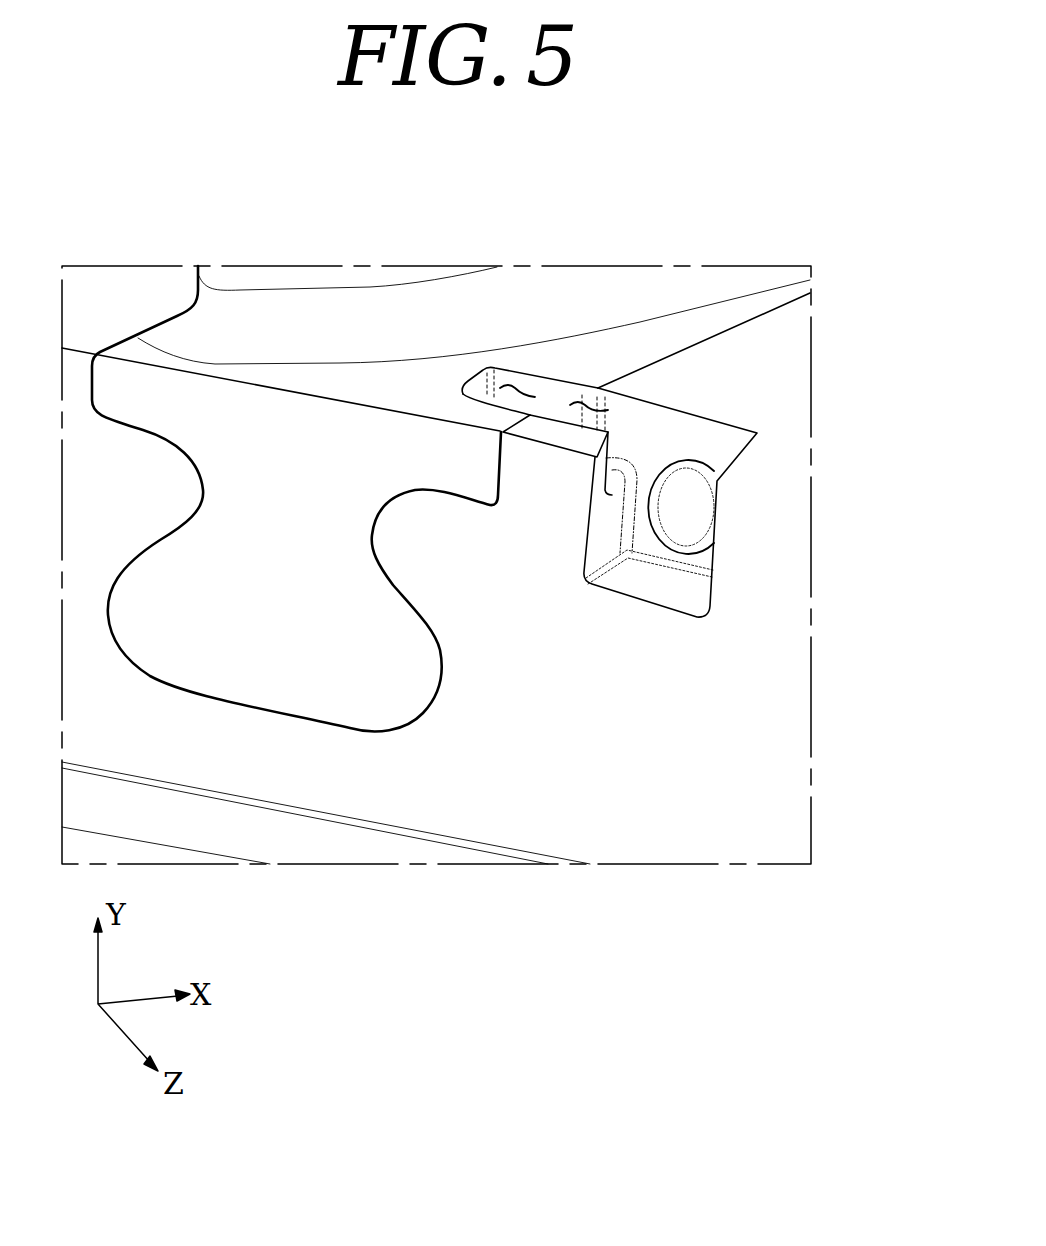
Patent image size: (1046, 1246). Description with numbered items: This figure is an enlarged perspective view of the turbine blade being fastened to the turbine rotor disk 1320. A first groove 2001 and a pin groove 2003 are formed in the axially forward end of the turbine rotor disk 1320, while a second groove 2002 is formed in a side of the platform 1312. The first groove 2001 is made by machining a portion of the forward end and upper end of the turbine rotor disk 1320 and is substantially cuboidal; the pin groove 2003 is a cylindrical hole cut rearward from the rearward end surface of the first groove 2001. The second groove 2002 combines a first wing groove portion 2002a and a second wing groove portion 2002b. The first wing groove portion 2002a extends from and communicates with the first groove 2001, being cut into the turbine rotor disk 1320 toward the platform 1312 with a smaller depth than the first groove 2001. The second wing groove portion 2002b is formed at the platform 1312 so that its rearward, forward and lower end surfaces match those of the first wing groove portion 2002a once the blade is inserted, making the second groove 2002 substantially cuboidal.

The platform 1312 is at (670, 337).
The turbine rotor disk 1320 is at (788, 328).
The first groove 2001 is at (648, 435).
The second groove 2002 is at (549, 302).
The first wing groove portion 2002a is at (596, 430).
The second wing groove portion 2002b is at (518, 392).
The pin groove 2003 is at (678, 495).